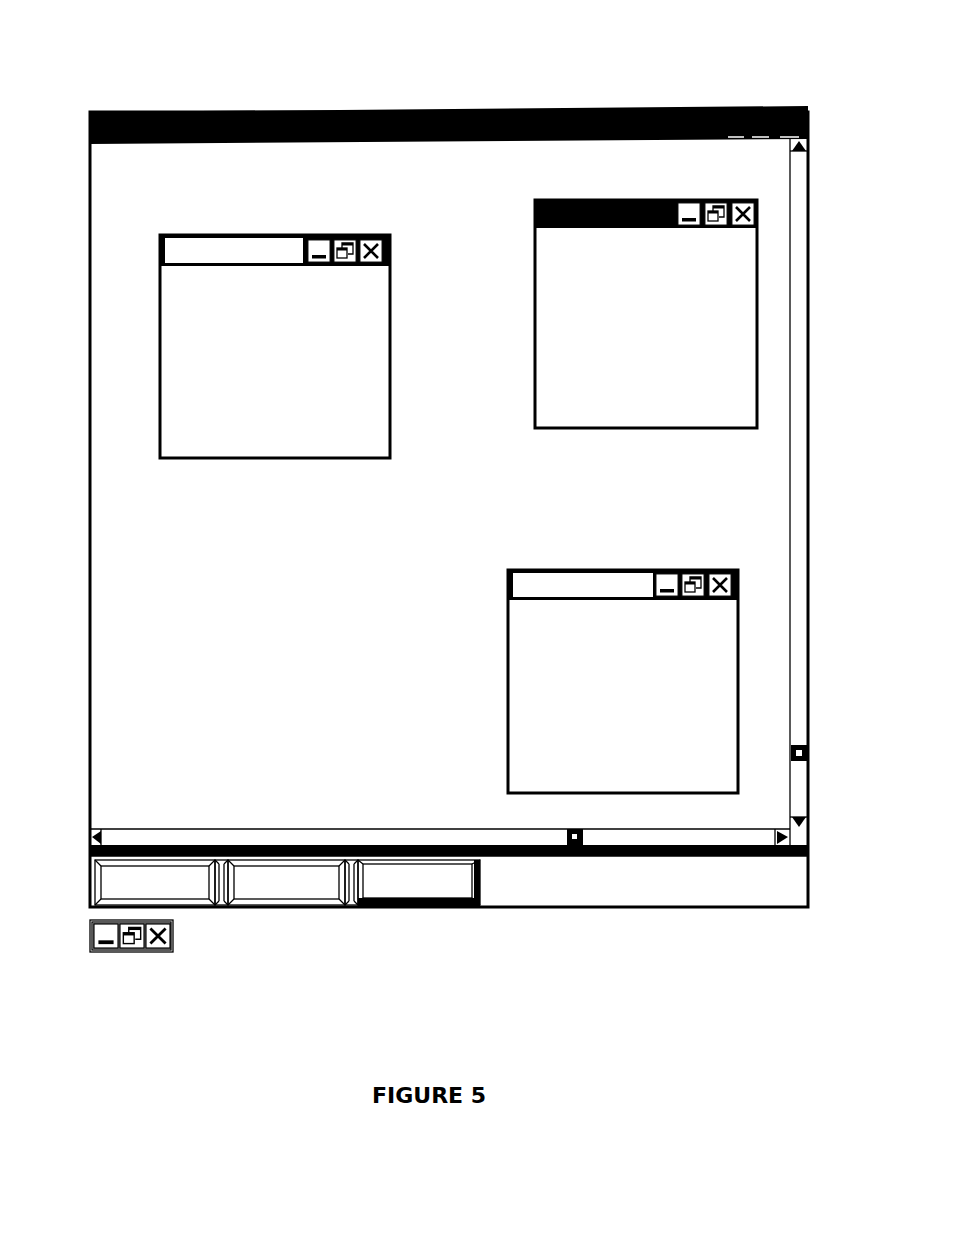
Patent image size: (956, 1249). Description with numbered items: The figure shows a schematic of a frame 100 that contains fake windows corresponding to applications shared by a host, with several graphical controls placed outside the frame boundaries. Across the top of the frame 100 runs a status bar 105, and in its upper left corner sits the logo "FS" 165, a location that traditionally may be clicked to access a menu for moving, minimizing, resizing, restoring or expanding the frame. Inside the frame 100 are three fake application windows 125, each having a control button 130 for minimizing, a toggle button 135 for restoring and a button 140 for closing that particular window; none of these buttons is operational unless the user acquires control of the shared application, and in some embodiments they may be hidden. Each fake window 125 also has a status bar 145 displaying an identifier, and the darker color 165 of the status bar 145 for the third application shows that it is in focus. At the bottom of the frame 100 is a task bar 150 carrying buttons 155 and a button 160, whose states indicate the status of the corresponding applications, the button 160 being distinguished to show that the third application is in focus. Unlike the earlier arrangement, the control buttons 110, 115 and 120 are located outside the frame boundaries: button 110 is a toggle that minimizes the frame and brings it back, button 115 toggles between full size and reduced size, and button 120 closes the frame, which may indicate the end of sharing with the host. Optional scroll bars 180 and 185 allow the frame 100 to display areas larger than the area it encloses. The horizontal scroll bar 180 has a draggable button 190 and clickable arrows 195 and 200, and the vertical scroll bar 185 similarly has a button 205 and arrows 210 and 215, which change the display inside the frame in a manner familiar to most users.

The frame 100 is at (176, 62).
The status bar 105 is at (329, 112).
The control button 110 is at (95, 955).
The control button 115 is at (132, 955).
The control button 120 is at (167, 953).
The fake application window 125 is at (175, 314).
The control button 130 is at (300, 236).
The toggle button 135 is at (383, 207).
The button 140 is at (390, 247).
The status bar 145 is at (217, 245).
The task bar 150 is at (627, 882).
The buttons 155 is at (288, 910).
The button 160 is at (457, 908).
The logo 165 is at (107, 112).
The scroll bar 180 is at (250, 814).
The scroll bar 185 is at (798, 658).
The button 190 is at (568, 832).
The arrow 195 is at (782, 846).
The arrow 200 is at (136, 794).
The button 205 is at (811, 753).
The arrow 210 is at (811, 147).
The arrow 215 is at (811, 819).